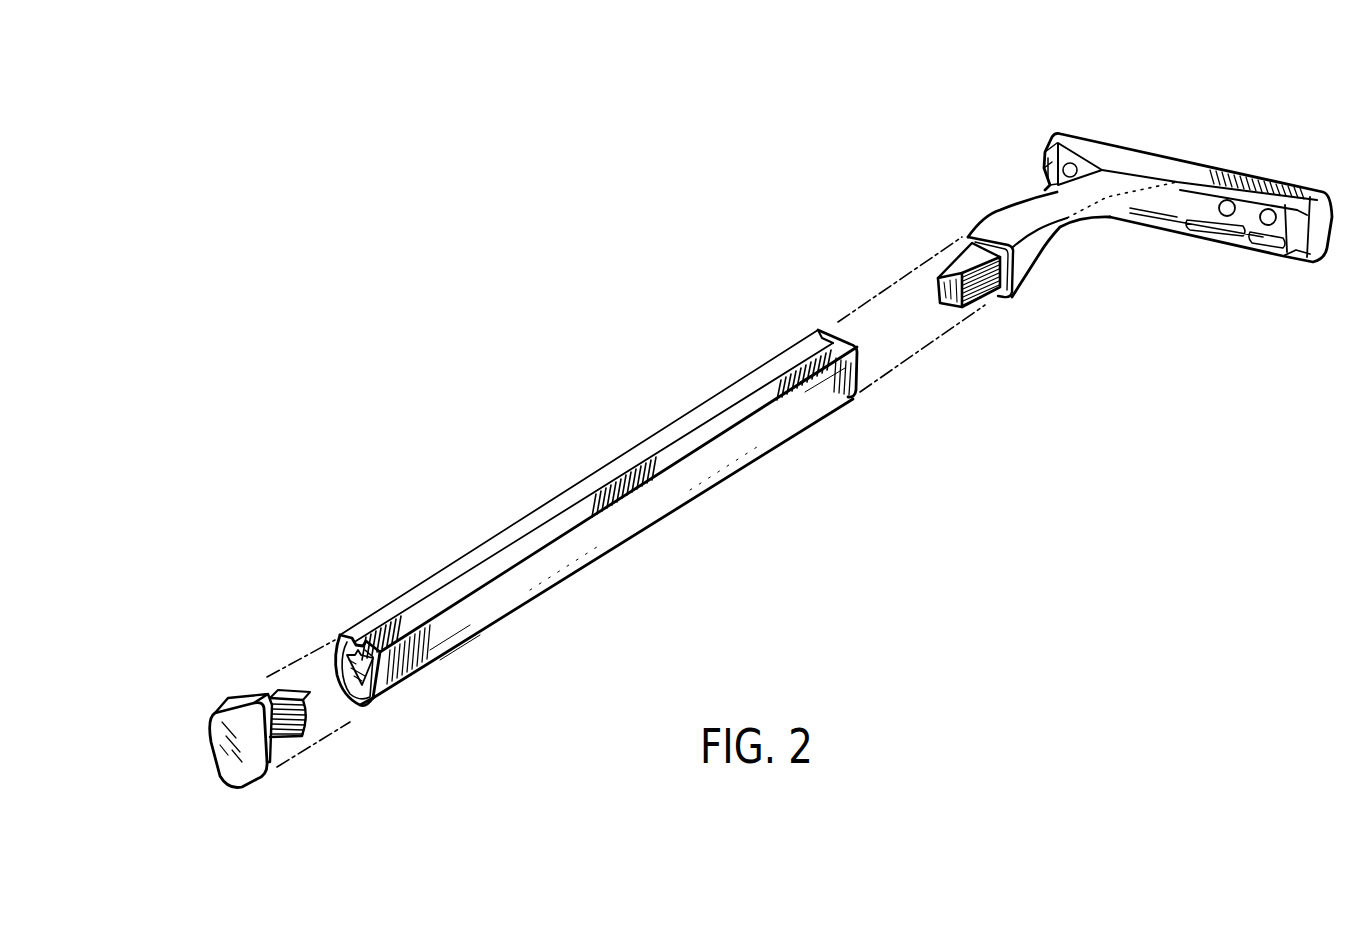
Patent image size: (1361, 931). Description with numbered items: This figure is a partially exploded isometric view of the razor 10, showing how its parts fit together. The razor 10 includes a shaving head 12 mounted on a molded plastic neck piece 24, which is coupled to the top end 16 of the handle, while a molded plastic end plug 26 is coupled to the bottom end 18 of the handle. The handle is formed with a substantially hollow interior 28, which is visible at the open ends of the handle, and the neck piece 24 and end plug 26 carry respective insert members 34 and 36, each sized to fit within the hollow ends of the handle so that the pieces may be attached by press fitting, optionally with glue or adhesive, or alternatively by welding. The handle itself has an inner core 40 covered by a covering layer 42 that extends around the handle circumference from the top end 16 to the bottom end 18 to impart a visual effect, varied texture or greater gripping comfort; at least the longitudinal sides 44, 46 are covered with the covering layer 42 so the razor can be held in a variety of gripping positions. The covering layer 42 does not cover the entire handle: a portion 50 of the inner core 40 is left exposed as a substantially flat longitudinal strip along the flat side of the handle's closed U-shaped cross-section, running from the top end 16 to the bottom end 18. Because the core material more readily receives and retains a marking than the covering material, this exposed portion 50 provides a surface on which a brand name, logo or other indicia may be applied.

The razor 10 is at (813, 447).
The shaving head 12 is at (1185, 149).
The top end 16 is at (837, 337).
The bottom end 18 is at (360, 711).
The neck piece 24 is at (983, 212).
The end plug 26 is at (235, 788).
The hollow interior 28 is at (339, 634).
The insert member 34 is at (981, 285).
The insert member 36 is at (260, 701).
The inner core 40 is at (372, 705).
The covering layer 42 is at (603, 520).
The longitudinal side 44 is at (326, 662).
The longitudinal side 46 is at (496, 608).
The exposed portion 50 is at (642, 460).